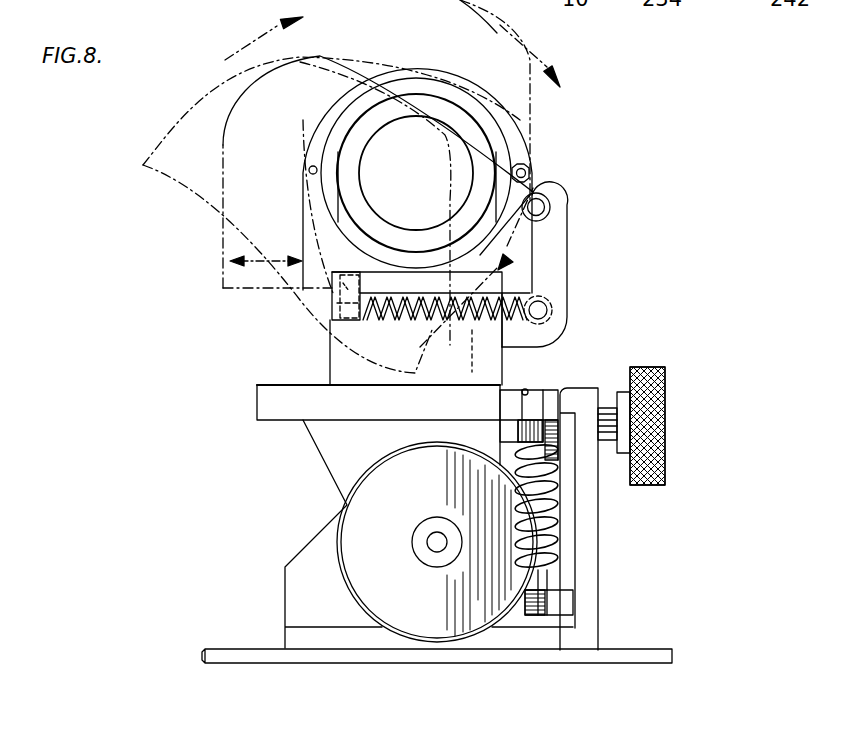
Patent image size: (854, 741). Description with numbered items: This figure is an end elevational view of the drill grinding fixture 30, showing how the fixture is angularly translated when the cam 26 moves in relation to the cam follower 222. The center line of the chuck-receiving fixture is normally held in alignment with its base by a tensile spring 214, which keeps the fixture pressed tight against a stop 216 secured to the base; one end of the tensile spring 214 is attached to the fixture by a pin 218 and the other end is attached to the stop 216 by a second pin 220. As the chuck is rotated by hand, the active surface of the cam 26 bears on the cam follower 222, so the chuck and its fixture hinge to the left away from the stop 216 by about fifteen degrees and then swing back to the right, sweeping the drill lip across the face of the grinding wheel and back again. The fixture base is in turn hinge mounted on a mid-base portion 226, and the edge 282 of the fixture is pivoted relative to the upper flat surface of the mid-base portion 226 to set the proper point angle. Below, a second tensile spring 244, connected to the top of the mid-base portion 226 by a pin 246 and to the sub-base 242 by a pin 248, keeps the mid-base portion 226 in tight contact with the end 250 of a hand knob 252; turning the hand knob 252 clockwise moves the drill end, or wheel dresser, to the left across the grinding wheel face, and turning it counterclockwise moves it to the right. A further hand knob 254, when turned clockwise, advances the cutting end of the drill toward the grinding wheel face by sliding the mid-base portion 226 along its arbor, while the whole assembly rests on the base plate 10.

The cam 26 is at (273, 62).
The drill grinding fixture 30 is at (151, 277).
The cam follower 222 is at (547, 198).
The stop 216 is at (553, 240).
The second pin 220 is at (545, 311).
The pin 218 is at (333, 297).
The tensile spring 214 is at (458, 340).
The edge of the fixture 282 is at (330, 363).
The mid-base portion 226 is at (493, 362).
The end of hand knob 250 is at (506, 418).
The pin 246 is at (512, 393).
The hand knob 252 is at (665, 405).
The tensile spring 244 is at (548, 505).
The sub-base 242 is at (598, 590).
The pin 248 is at (560, 598).
The hand knob 254 is at (367, 508).
The base plate 10 is at (652, 648).